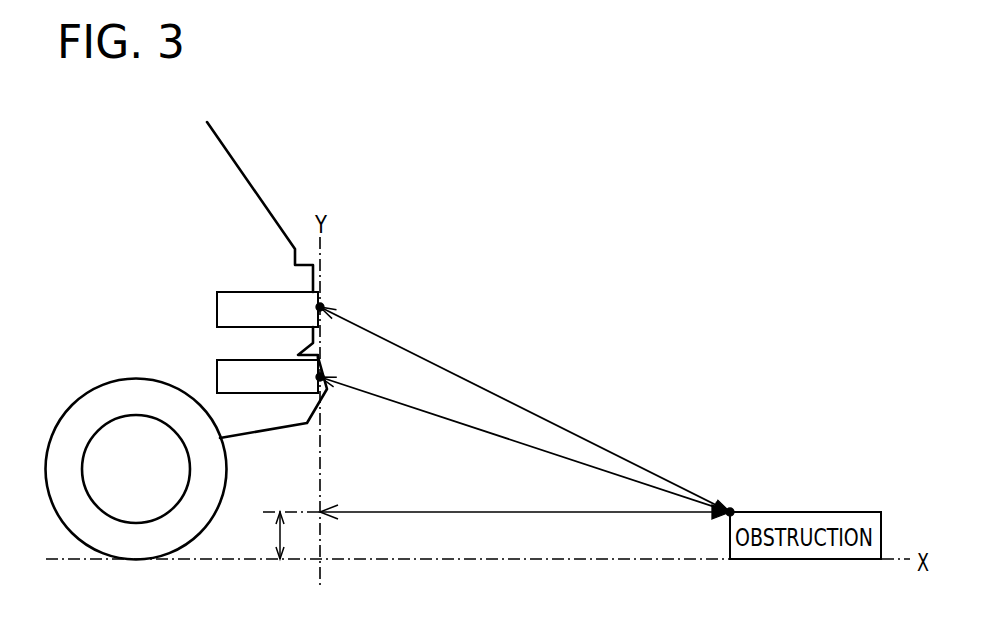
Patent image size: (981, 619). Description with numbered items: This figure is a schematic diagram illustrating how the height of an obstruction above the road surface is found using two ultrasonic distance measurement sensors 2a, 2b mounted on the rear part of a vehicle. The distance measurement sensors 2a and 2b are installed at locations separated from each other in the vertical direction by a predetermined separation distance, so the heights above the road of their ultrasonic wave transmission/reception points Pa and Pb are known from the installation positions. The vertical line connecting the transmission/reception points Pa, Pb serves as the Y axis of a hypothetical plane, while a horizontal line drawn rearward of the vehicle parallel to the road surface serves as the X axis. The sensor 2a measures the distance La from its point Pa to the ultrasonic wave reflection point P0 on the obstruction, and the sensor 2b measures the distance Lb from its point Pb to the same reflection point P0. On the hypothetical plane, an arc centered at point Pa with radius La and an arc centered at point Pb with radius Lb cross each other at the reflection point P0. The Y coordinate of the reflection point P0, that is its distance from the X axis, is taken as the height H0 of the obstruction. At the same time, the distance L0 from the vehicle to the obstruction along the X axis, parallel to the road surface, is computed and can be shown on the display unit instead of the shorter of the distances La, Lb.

The distance measurement sensor 2a is at (237, 292).
The distance measurement sensor 2b is at (237, 360).
The ultrasonic wave transmission/reception point Pa is at (323, 304).
The ultrasonic wave transmission/reception point Pb is at (323, 374).
The ultrasonic wave reflection point P0 is at (732, 508).
The distance La is at (525, 409).
The distance Lb is at (525, 444).
The distance L0 is at (525, 501).
The height of the obstruction H0 is at (263, 535).